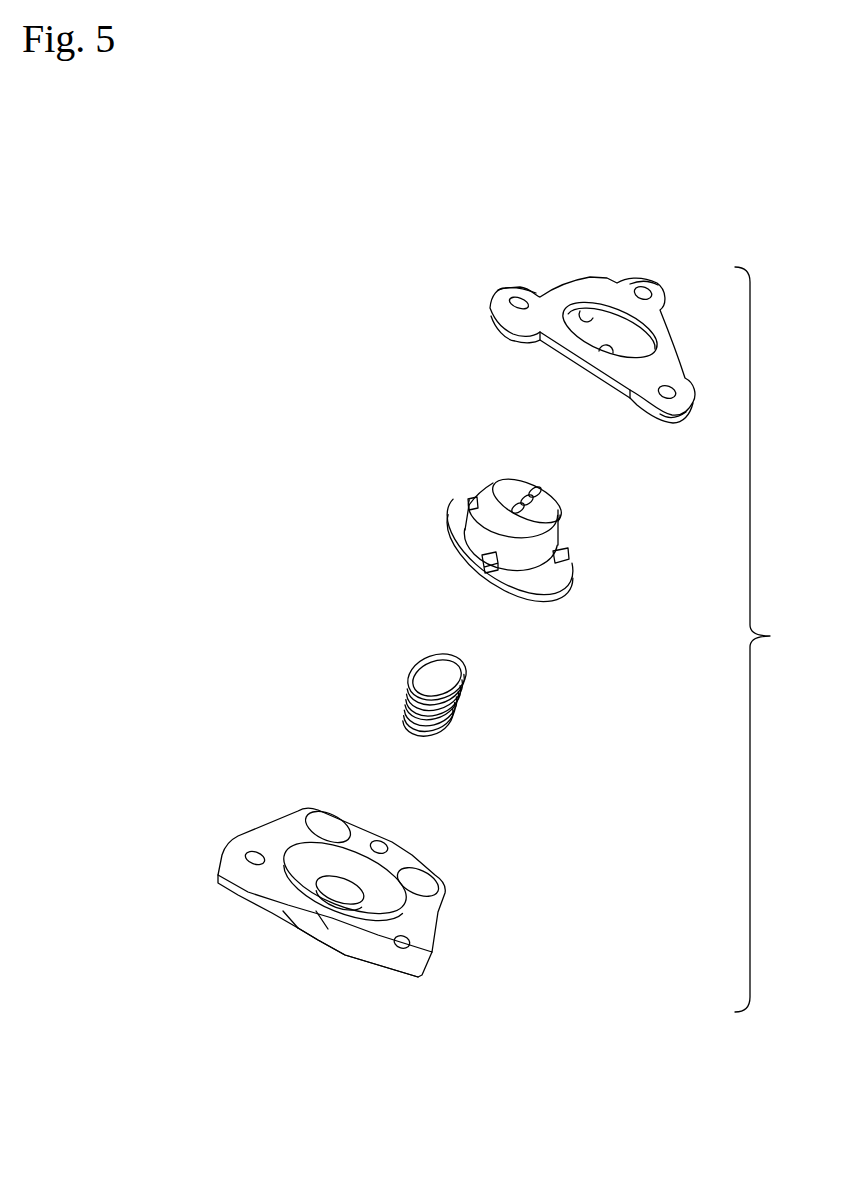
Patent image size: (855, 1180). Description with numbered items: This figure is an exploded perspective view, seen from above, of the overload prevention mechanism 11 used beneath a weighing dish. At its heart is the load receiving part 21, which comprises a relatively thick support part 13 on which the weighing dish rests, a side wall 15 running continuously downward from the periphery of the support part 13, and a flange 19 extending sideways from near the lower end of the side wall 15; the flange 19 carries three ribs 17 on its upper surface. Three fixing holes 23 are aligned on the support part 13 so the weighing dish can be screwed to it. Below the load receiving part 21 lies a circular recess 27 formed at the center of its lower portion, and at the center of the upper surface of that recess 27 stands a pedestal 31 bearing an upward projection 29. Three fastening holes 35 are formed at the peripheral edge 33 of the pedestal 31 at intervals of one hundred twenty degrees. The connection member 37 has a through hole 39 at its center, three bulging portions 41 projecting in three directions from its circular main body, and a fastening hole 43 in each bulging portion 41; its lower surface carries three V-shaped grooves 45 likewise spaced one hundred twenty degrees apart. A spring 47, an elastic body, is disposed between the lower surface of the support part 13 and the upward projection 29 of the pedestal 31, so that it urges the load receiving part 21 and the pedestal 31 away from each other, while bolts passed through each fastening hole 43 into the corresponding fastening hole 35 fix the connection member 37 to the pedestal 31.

The overload prevention mechanism 11 is at (771, 639).
The support part 13 is at (542, 475).
The side wall 15 is at (556, 534).
The ribs 17 is at (469, 501).
The flange 19 is at (446, 543).
The load receiving part 21 is at (509, 526).
The fixing holes 23 is at (533, 488).
The circular recess 27 is at (293, 860).
The upward projection 29 is at (338, 888).
The pedestal 31 is at (366, 901).
The peripheral edge 33 is at (376, 938).
The fastening holes 35 is at (384, 845).
The connection member 37 is at (586, 320).
The through hole 39 is at (608, 354).
The bulging portions 41 is at (517, 287).
The fastening holes 43 is at (512, 302).
The V-shaped grooves 45 is at (594, 309).
The spring 47 is at (463, 712).